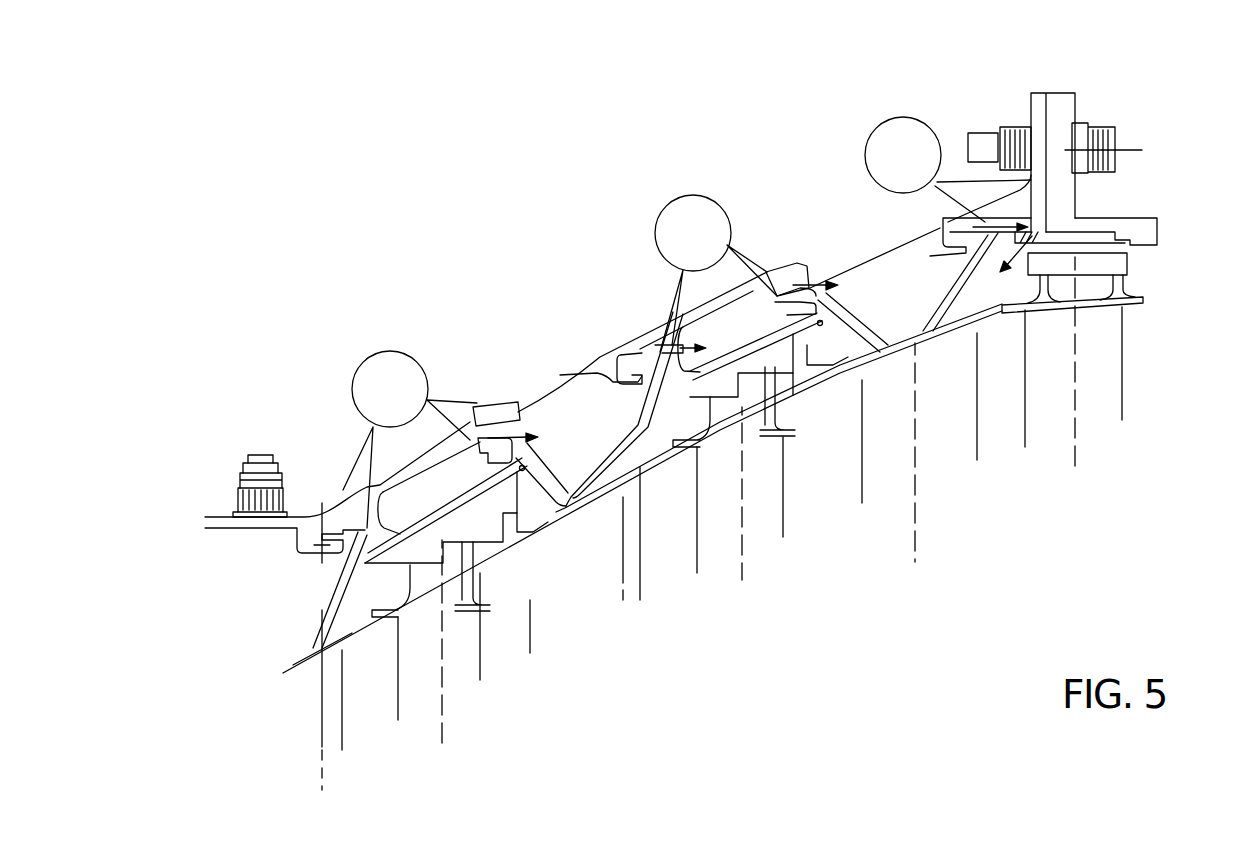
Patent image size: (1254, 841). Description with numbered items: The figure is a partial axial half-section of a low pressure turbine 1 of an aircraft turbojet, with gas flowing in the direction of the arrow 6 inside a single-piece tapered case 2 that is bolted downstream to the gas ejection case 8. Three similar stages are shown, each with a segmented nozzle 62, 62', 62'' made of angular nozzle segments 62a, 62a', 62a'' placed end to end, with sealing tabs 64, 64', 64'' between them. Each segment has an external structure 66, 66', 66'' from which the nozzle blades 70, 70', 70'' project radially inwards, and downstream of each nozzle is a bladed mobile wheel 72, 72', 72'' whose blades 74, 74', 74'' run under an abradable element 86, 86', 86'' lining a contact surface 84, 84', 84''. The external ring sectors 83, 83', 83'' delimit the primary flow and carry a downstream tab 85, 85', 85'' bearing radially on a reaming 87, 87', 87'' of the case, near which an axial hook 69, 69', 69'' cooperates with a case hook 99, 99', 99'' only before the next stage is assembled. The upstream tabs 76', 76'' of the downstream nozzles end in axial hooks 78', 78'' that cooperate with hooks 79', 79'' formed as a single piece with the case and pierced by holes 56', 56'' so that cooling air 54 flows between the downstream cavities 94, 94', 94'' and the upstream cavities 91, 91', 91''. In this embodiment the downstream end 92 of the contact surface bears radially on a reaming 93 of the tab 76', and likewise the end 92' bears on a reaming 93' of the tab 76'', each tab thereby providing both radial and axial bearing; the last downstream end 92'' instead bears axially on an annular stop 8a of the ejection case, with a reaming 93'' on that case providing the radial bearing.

The turbine 1 is at (478, 275).
The case 2 is at (557, 380).
The arrow 6 is at (470, 170).
The gas ejection case 8 is at (1067, 97).
The annular stop 8a is at (1152, 236).
The cooling air 54 is at (490, 450).
The holes 56' is at (433, 451).
The holes 56'' is at (742, 214).
The nozzle 62 is at (366, 828).
The nozzle 62' is at (652, 682).
The nozzle 62'' is at (988, 537).
The angular nozzle segment 62a is at (361, 782).
The angular nozzle segment 62a' is at (644, 636).
The angular nozzle segment 62a'' is at (977, 490).
The sealing tabs 64 is at (308, 590).
The sealing tabs 64' is at (624, 409).
The sealing tabs 64'' is at (966, 282).
The external structure 66 is at (267, 618).
The external structure 66' is at (589, 474).
The external structure 66'' is at (916, 309).
The axial hook 69 is at (387, 442).
The axial hook 69' is at (686, 274).
The axial hook 69'' is at (948, 154).
The nozzle blades 70 is at (360, 700).
The nozzle blades 70' is at (660, 523).
The nozzle blades 70'' is at (971, 447).
The bladed mobile wheel 72 is at (486, 643).
The bladed mobile wheel 72' is at (802, 495).
The bladed mobile wheel 72'' is at (1088, 367).
The blades 74 is at (497, 624).
The blades 74' is at (804, 512).
The blades 74'' is at (1150, 356).
The upstream tab 76' is at (546, 471).
The upstream tab 76'' is at (862, 320).
The axial hook 78' is at (474, 396).
The axial hook 78'' is at (801, 238).
The axial hook 79' is at (452, 388).
The axial hook 79'' is at (771, 228).
The external ring sector 83 is at (606, 499).
The external ring sector 83' is at (564, 581).
The external ring sector 83'' is at (953, 369).
The contact surface 84 is at (402, 603).
The contact surface 84' is at (681, 449).
The contact surface 84'' is at (1103, 204).
The downstream tab 85 is at (285, 577).
The downstream tab 85' is at (618, 397).
The downstream tab 85'' is at (993, 330).
The abradable element 86 is at (470, 580).
The abradable element 86' is at (772, 408).
The abradable element 86'' is at (1100, 295).
The reaming 87 is at (347, 473).
The reaming 87' is at (684, 314).
The reaming 87'' is at (1016, 146).
The upstream annular cooling air circulation cavity 91 is at (249, 632).
The upstream annular cooling air circulation cavity 91' is at (547, 352).
The upstream annular cooling air circulation cavity 91'' is at (835, 191).
The downstream end 92 is at (456, 525).
The downstream end 92' is at (769, 370).
The downstream end 92'' is at (1113, 268).
The reaming 93 is at (525, 426).
The reaming 93' is at (834, 286).
The reaming 93'' is at (1089, 210).
The downstream annular cooling air circulation cavity 94 is at (429, 488).
The downstream annular cooling air circulation cavity 94' is at (696, 331).
The downstream annular cooling air circulation cavity 94'' is at (1016, 142).
The axial hook 99 is at (337, 492).
The axial hook 99' is at (642, 342).
The axial hook 99'' is at (920, 231).